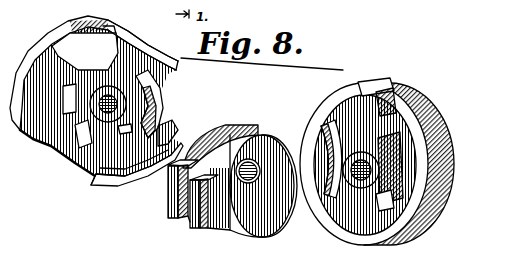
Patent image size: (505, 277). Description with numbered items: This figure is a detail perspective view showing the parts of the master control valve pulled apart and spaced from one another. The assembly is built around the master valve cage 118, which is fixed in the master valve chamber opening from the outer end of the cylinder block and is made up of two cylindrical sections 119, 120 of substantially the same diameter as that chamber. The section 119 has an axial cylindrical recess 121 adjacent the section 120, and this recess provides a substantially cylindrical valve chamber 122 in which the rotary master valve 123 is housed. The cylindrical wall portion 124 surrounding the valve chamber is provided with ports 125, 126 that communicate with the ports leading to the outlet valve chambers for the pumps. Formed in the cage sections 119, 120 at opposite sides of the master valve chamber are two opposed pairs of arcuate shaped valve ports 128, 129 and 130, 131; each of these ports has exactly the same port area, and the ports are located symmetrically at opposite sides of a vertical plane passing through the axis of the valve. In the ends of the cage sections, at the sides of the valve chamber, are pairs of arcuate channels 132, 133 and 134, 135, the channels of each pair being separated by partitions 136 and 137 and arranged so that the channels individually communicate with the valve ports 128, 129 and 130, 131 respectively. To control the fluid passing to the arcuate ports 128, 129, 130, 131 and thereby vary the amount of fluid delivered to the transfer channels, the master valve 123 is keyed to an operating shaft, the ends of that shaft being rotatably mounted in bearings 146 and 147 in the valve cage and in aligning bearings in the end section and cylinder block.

The master valve cage 118 is at (143, 40).
The cylindrical section 119 is at (150, 99).
The cylindrical section 120 is at (388, 155).
The axial cylindrical recess 121 is at (168, 122).
The valve chamber 122 is at (84, 170).
The rotary master valve 123 is at (228, 122).
The cylindrical wall portion 124 is at (113, 176).
The port 125 is at (52, 156).
The port 126 is at (146, 89).
The arcuate shaped valve port 128 is at (44, 146).
The arcuate shaped valve port 129 is at (144, 78).
The arcuate shaped valve port 130 is at (402, 220).
The arcuate shaped valve port 131 is at (306, 128).
The arcuate channel 132 is at (30, 42).
The arcuate channel 133 is at (105, 11).
The arcuate channel 134 is at (430, 112).
The arcuate channel 135 is at (358, 78).
The partition 136 is at (64, 36).
The partition 137 is at (390, 95).
The bearing 146 is at (103, 150).
The bearing 147 is at (332, 210).